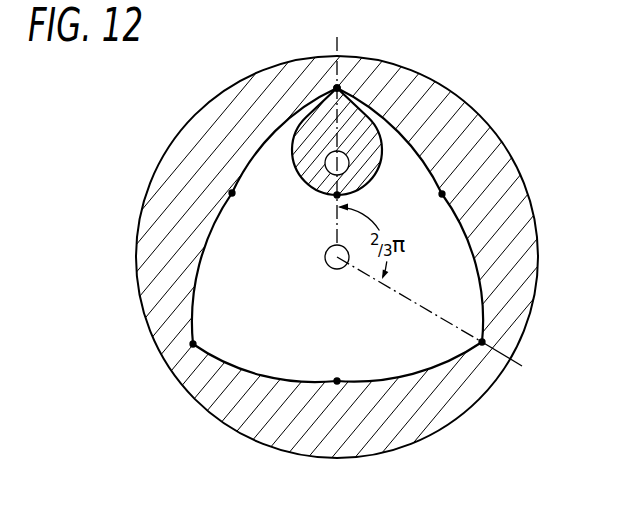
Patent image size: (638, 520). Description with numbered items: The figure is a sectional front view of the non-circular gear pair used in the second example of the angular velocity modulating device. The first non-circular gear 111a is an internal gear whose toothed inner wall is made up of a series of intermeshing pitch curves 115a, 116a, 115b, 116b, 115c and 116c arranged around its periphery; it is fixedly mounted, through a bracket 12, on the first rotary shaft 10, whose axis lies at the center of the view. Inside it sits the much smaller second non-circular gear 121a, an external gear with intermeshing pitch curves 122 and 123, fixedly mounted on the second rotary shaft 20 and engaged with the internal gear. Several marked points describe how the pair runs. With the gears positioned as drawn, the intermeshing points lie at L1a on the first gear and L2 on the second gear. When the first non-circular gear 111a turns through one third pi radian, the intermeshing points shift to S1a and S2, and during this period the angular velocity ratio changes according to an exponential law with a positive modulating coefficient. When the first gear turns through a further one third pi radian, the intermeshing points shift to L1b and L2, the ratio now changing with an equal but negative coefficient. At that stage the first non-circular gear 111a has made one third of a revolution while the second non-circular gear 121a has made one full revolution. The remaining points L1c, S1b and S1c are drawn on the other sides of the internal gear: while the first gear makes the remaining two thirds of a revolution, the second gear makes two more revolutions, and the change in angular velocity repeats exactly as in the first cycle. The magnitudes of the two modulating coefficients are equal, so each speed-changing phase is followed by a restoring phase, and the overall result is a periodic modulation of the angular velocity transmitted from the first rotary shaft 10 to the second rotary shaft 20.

The bracket 12 is at (319, 260).
The second rotary shaft 20 is at (257, 260).
The first rotary shaft 10 is at (329, 263).
The first non-circular gear 111a is at (470, 124).
The intermeshing pitch curve 122 is at (400, 122).
The intermeshing pitch curve 123 is at (292, 163).
The second non-circular gear 121a is at (336, 87).
The intermeshing pitch curve 115a is at (413, 152).
The intermeshing pitch curve 115b is at (400, 374).
The intermeshing pitch curve 115c is at (197, 274).
The intermeshing pitch curve 116a is at (469, 253).
The intermeshing pitch curve 116b is at (290, 365).
The intermeshing pitch curve 116c is at (260, 148).
The intermeshing point L1a is at (342, 89).
The intermeshing point L1b is at (478, 341).
The intermeshing point L1c is at (195, 344).
The intermeshing point L2 is at (348, 62).
The intermeshing point S1a is at (442, 197).
The intermeshing point S1b is at (338, 380).
The intermeshing point S1c is at (232, 196).
The intermeshing point S2 is at (335, 198).